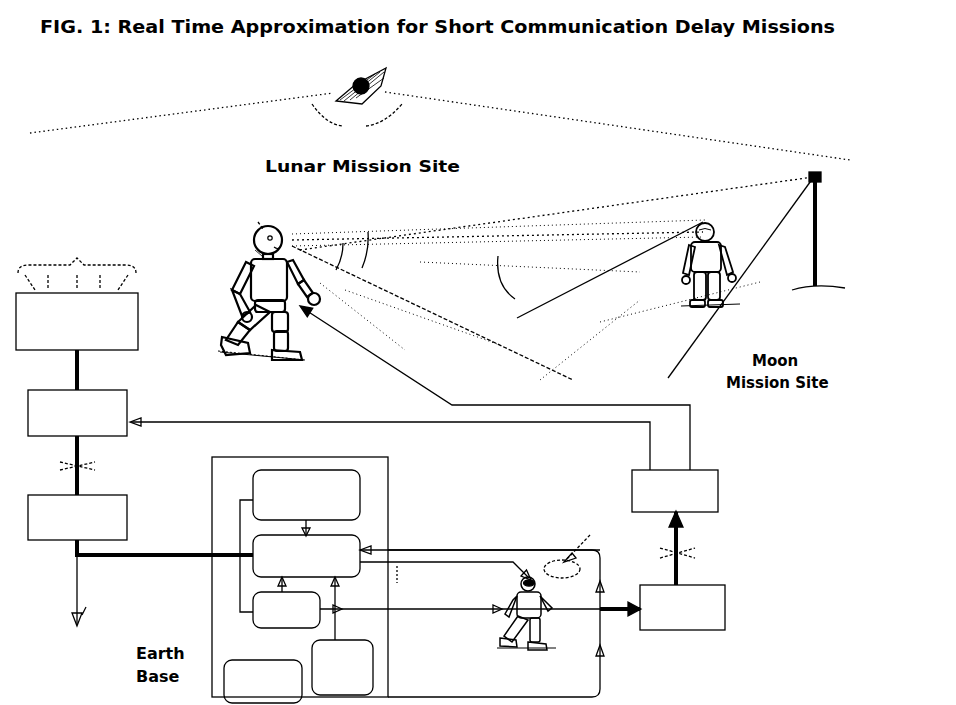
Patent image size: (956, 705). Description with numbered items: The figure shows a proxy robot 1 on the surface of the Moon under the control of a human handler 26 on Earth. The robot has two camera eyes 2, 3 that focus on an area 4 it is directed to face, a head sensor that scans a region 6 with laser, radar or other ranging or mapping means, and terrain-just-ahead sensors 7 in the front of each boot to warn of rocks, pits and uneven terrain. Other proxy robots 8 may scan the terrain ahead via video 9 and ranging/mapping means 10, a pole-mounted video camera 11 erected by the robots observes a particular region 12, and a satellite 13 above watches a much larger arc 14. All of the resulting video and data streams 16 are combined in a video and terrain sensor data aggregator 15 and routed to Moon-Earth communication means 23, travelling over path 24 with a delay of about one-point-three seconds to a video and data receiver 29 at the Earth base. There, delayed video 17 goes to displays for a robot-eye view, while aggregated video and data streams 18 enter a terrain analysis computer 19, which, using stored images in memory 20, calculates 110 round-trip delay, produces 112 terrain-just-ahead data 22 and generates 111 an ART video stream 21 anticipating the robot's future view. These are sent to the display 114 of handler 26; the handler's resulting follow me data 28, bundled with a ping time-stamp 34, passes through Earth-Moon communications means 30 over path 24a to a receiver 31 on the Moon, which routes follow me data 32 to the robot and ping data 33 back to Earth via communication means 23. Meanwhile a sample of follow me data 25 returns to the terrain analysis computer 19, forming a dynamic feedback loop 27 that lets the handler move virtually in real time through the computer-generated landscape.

The proxy robot 1 is at (253, 238).
The camera eye 2 is at (285, 233).
The camera eye 3 is at (256, 251).
The area 4 is at (432, 311).
The region 6 is at (309, 239).
The terrain-just-ahead sensors 7 is at (300, 351).
The other proxy robots 8 is at (713, 228).
The video 9 is at (660, 291).
The ranging/mapping means 10 is at (515, 277).
The pole-mounted video camera 11 is at (822, 181).
The region 12 is at (785, 215).
The satellite 13 is at (381, 82).
The arc 14 is at (357, 117).
The video and terrain sensor data aggregator 15 is at (140, 318).
The video and data streams 16 is at (77, 267).
The delayed video 17 is at (77, 646).
The aggregated video and data streams 18 is at (113, 560).
The terrain analysis computer 19 is at (390, 502).
The memory 20 is at (342, 640).
The ART video stream 21 is at (400, 585).
The terrain-just-ahead data 22 is at (484, 616).
The Moon-Earth communication means 23 is at (130, 398).
The path 24 is at (42, 466).
The path 24a is at (692, 551).
The follow me data sample 25 is at (422, 552).
The human handler 26 is at (518, 587).
The dynamic feedback loop 27 is at (590, 510).
The follow me data 28 is at (613, 612).
The video and data receiver 29 is at (130, 522).
The Earth-Moon communications means 30 is at (708, 585).
The receiver 31 is at (720, 495).
The follow me data 32 is at (647, 405).
The ping data 33 is at (624, 423).
The ping time-stamp 34 is at (258, 664).
The round-trip delay calculation 110 is at (252, 500).
The ART video generation 111 is at (358, 578).
The terrain-just-ahead data production 112 is at (255, 627).
The display 114 is at (538, 584).